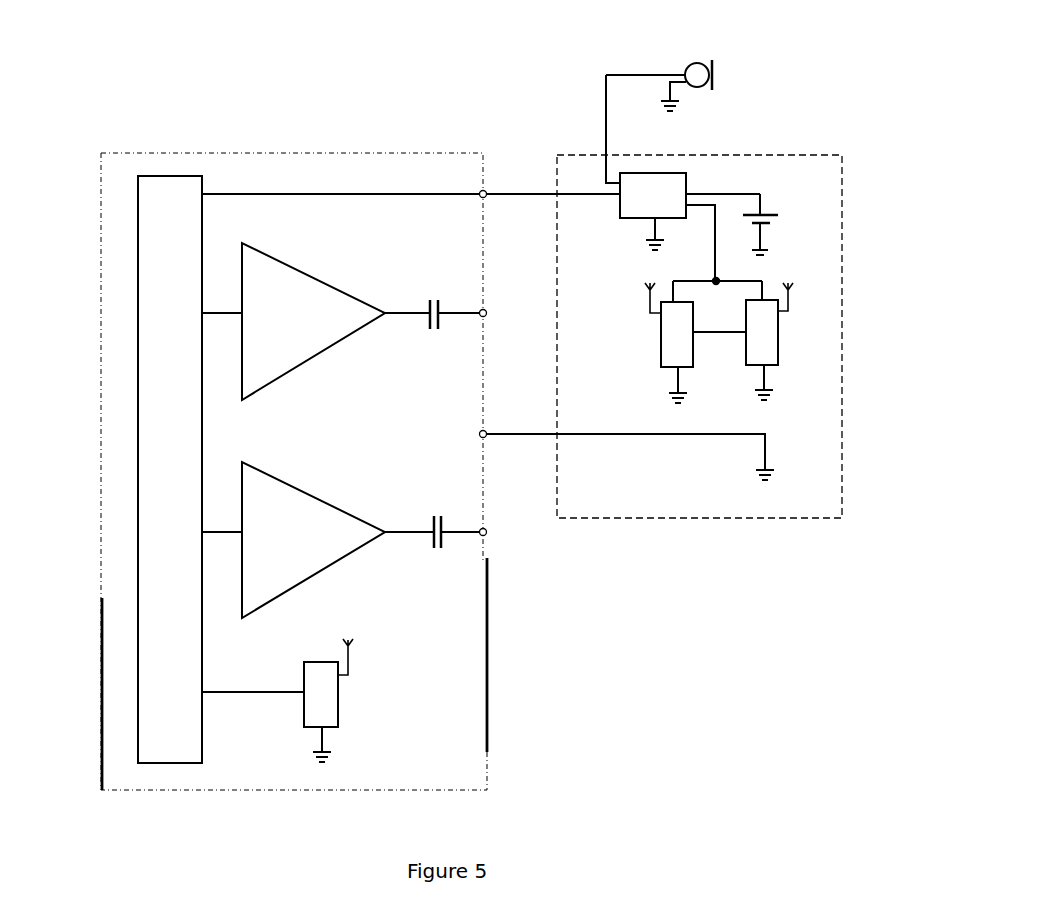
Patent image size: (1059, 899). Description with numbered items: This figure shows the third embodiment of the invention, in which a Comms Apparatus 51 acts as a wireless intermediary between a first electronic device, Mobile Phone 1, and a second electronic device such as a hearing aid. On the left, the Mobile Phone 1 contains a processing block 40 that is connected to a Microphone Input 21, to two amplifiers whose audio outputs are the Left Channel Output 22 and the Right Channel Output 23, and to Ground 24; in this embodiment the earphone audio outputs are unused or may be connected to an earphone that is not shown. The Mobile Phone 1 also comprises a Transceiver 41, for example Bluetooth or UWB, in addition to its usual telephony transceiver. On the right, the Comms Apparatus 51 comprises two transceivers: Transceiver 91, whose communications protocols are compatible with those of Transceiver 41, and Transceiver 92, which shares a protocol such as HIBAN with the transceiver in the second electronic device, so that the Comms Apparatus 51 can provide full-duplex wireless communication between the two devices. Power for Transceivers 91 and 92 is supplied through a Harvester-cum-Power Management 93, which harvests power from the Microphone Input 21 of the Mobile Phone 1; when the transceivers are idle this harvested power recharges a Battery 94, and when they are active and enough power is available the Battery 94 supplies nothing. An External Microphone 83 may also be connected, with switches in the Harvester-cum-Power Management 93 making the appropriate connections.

The Mobile Phone 1 is at (72, 538).
The Microphone Input 21 is at (486, 190).
The Left Channel Output 22 is at (486, 318).
The Right Channel Output 23 is at (486, 527).
The Ground 24 is at (486, 438).
The signal processing unit 40 is at (147, 347).
The Transceiver 41 is at (328, 692).
The Comms Apparatus 51 is at (752, 594).
The External Microphone 83 is at (697, 62).
The Transceiver 91 is at (685, 361).
The Transceiver 92 is at (773, 340).
The Harvester-cum-Power Management 93 is at (673, 177).
The Battery 94 is at (778, 214).